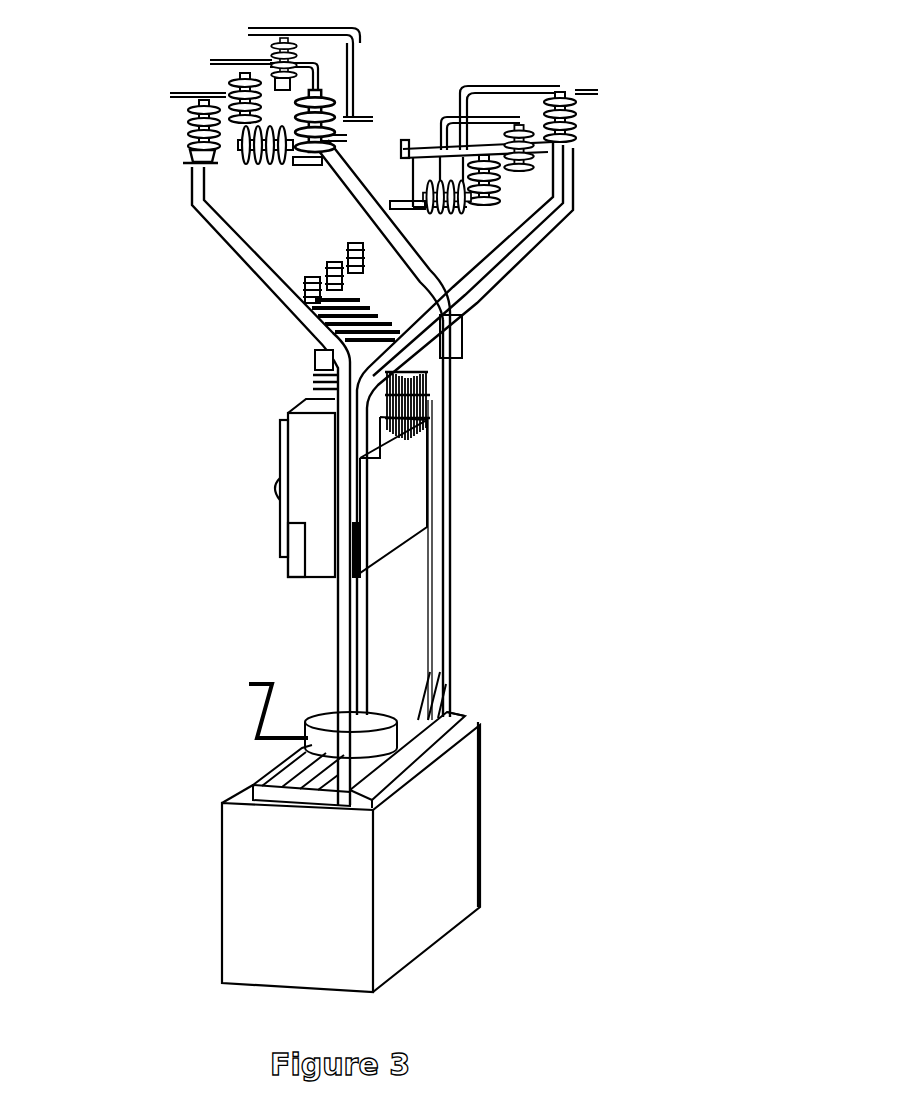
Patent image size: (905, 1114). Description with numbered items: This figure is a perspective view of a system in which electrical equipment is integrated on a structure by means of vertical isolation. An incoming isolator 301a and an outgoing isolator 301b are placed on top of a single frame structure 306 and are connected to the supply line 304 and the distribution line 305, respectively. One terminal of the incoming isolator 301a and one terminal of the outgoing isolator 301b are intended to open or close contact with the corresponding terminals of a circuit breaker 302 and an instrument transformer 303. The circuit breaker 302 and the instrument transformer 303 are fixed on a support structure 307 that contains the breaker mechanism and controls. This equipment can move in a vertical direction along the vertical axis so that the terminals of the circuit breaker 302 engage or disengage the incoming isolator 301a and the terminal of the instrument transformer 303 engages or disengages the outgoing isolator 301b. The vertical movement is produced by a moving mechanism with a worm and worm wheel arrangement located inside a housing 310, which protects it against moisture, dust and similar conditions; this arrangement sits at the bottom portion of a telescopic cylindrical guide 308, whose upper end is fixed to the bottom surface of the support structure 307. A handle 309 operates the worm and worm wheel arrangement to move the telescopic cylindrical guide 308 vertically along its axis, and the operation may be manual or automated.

The incoming isolator 301a is at (300, 162).
The outgoing isolator 301b is at (400, 214).
The circuit breaker 302 is at (330, 357).
The instrument transformer 303 is at (367, 345).
The supply line 304 is at (227, 57).
The distribution line 305 is at (584, 92).
The single frame structure 306 is at (450, 490).
The support structure 307 is at (283, 520).
The telescopic cylindrical guide 308 is at (360, 605).
The handle 309 is at (255, 677).
The housing 310 is at (373, 720).